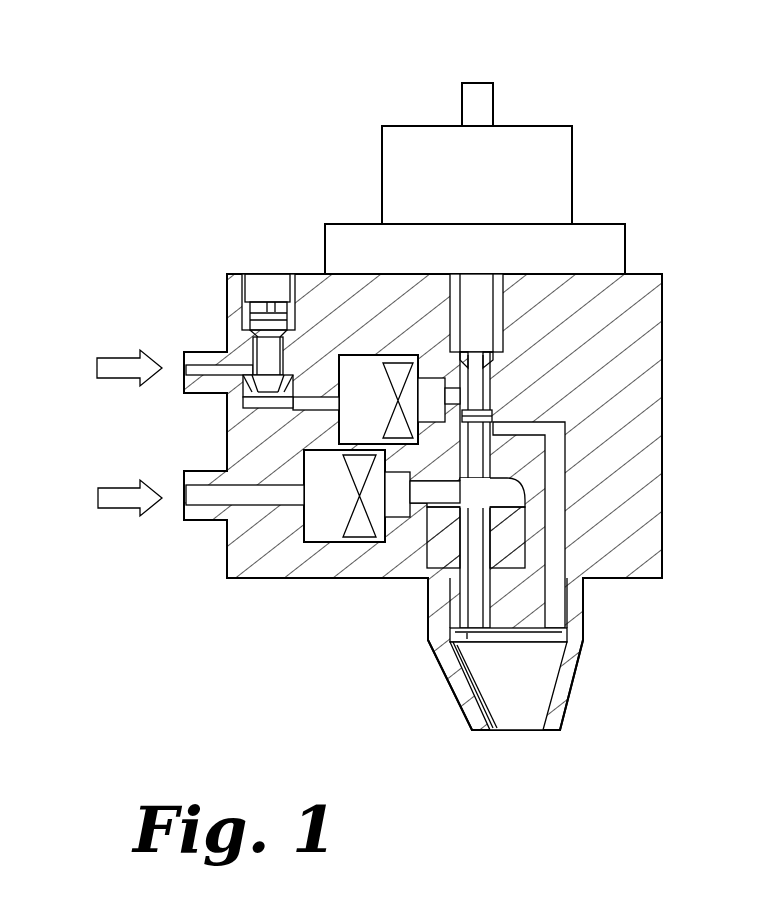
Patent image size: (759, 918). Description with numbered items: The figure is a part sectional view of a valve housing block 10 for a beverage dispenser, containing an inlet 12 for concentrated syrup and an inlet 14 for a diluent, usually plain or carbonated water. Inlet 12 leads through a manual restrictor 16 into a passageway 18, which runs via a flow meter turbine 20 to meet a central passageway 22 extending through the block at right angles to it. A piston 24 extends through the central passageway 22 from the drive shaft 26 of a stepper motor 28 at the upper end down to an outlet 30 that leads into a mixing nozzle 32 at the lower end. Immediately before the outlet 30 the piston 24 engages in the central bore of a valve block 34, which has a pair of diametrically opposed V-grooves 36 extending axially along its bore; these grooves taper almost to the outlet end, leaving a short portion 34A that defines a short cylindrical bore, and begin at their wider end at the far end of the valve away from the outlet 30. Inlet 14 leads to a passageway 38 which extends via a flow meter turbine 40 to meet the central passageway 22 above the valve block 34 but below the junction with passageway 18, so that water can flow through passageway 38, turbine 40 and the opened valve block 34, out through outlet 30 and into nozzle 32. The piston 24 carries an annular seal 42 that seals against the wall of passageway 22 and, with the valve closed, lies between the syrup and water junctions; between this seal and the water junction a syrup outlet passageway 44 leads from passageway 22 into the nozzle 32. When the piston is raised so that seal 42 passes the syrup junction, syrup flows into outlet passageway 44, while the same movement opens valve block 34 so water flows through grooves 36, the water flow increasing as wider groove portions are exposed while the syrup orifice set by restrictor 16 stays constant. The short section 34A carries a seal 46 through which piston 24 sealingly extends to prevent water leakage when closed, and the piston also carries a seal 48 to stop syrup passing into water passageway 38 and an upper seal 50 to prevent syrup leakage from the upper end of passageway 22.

The valve housing block 10 is at (203, 600).
The inlet 12 is at (208, 372).
The inlet 14 is at (193, 500).
The manual restrictor 16 is at (262, 287).
The passageway 18 is at (452, 392).
The flow meter turbine 20 is at (395, 420).
The central passageway 22 is at (487, 390).
The piston 24 is at (517, 298).
The drive shaft 26 is at (480, 285).
The stepper motor 28 is at (570, 120).
The outlet 30 is at (470, 630).
The mixing nozzle 32 is at (580, 640).
The valve block 34 is at (560, 540).
The short portion 34A is at (585, 572).
The V-grooves 36 is at (458, 508).
The passageway 38 is at (275, 500).
The flow meter turbine 40 is at (362, 475).
The annular seal 42 is at (492, 416).
The syrup outlet passageway 44 is at (520, 428).
The seal 46 is at (442, 606).
The seal 48 is at (500, 468).
The upper seal 50 is at (500, 358).